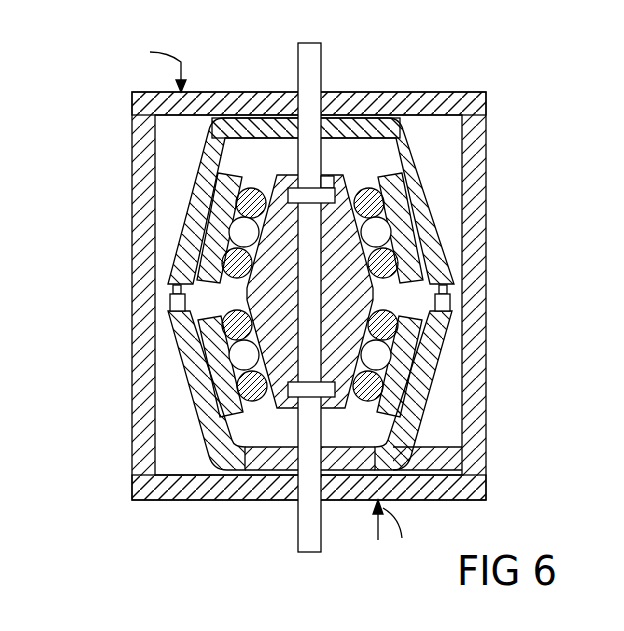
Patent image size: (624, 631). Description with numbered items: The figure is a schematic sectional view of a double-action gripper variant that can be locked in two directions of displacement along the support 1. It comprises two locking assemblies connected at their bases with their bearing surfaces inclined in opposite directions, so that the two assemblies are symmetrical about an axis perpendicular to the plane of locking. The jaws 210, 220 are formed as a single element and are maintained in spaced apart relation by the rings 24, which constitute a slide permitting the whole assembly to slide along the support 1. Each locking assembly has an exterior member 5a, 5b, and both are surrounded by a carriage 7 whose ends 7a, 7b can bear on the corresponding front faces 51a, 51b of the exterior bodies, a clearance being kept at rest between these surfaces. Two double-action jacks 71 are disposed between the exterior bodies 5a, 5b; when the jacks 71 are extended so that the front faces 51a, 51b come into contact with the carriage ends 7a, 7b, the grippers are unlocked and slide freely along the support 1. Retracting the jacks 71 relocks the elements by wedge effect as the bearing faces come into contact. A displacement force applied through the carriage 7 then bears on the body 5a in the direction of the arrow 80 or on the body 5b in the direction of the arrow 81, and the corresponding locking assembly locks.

The support 1 is at (308, 63).
The carriage 7 is at (133, 128).
The end of the carriage 7a is at (443, 102).
The end of the carriage 7b is at (200, 487).
The exterior member 5a is at (202, 193).
The exterior member 5b is at (203, 390).
The front face 51a is at (325, 172).
The front face 51b is at (272, 462).
The double-action jacks 71 is at (448, 297).
The jaw 220 is at (303, 188).
The rings 24 is at (345, 170).
The jaw 210 is at (330, 172).
The arrow 80 is at (148, 61).
The arrow 81 is at (396, 535).